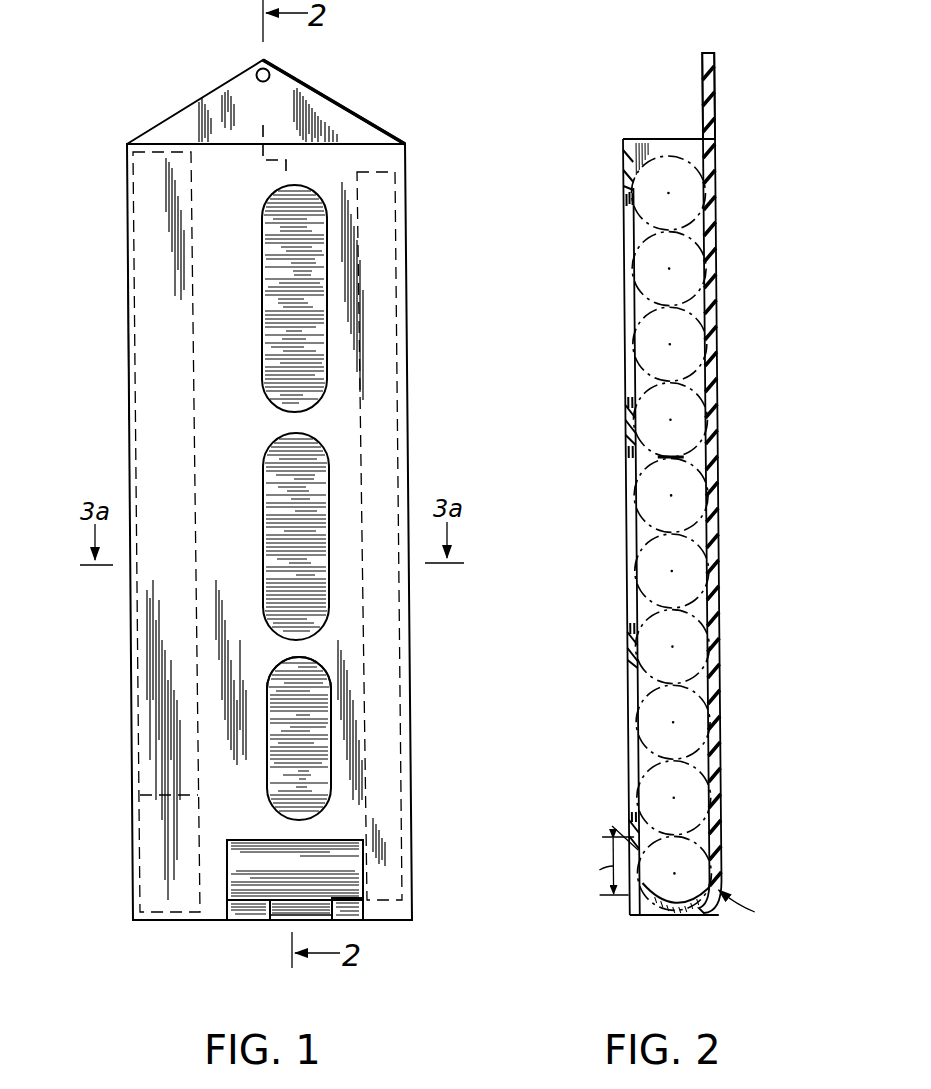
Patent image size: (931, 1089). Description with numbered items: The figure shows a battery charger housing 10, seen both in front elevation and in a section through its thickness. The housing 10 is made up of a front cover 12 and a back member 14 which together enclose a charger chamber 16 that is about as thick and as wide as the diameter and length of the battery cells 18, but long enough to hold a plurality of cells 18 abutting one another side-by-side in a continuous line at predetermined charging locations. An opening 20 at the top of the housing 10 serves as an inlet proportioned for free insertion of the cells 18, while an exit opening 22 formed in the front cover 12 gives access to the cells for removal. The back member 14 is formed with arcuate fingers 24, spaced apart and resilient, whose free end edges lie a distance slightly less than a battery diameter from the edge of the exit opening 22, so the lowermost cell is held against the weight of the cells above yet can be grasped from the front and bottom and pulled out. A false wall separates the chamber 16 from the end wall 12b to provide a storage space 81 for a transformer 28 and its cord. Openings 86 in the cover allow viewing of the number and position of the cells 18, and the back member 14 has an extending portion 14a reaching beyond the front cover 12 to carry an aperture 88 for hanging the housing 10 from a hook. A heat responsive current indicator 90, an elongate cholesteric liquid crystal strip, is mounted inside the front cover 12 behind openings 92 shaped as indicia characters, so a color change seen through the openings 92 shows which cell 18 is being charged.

In FIG. 1, the housing 10 is at (420, 164).
In FIG. 2, the housing 10 is at (614, 252).
In FIG. 1, the front cover 12 is at (232, 293).
In FIG. 2, the front cover 12 is at (626, 417).
In FIG. 1, the end wall 12b is at (135, 281).
In FIG. 2, the back member 14 is at (716, 312).
In FIG. 1, the extending portion 14a is at (300, 90).
In FIG. 2, the charger chamber 16 is at (692, 457).
In FIG. 1, the battery cells 18 is at (286, 340).
In FIG. 2, the battery cells 18 is at (700, 210).
In FIG. 1, the opening 20 is at (348, 140).
In FIG. 2, the opening 20 is at (687, 136).
In FIG. 1, the exit opening 22 is at (262, 852).
In FIG. 2, the exit opening 22 is at (634, 888).
In FIG. 1, the arcuate fingers 24 is at (258, 922).
In FIG. 2, the arcuate fingers 24 is at (682, 916).
In FIG. 1, the transformer 28 is at (160, 855).
In FIG. 1, the storage space 81 is at (140, 355).
In FIG. 1, the openings 86 is at (282, 625).
In FIG. 2, the openings 86 is at (633, 630).
In FIG. 1, the aperture 88 is at (256, 70).
In FIG. 2, the aperture 88 is at (716, 72).
In FIG. 1, the heat responsive current indicator 90 is at (396, 236).
In FIG. 1, the openings 92 is at (392, 418).